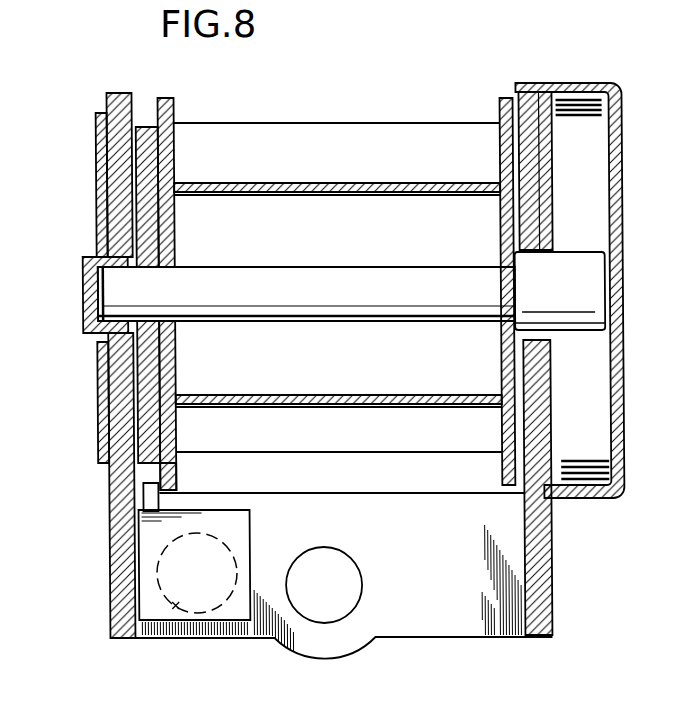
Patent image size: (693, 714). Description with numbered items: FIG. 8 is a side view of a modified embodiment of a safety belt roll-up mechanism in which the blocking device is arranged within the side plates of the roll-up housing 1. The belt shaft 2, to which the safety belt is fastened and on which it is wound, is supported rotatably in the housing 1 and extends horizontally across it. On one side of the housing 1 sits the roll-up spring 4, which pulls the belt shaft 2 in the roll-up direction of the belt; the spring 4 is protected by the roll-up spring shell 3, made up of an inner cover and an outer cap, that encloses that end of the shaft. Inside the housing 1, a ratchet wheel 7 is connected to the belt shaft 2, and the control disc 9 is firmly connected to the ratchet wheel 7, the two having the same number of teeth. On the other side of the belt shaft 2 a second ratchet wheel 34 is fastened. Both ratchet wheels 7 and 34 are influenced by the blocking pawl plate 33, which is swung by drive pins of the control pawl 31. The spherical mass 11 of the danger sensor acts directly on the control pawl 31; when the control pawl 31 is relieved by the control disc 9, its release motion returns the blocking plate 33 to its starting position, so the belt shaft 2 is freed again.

The roll-up housing 1 is at (423, 620).
The belt shaft 2 is at (285, 188).
The roll-up spring shell 3 is at (615, 195).
The roll-up spring 4 is at (572, 135).
The ratchet wheel 7 is at (168, 103).
The control disc 9 is at (146, 135).
The spherical mass 11 is at (173, 608).
The control pawl 31 is at (153, 498).
The blocking pawl plate 33 is at (185, 471).
The second ratchet wheel 34 is at (504, 104).